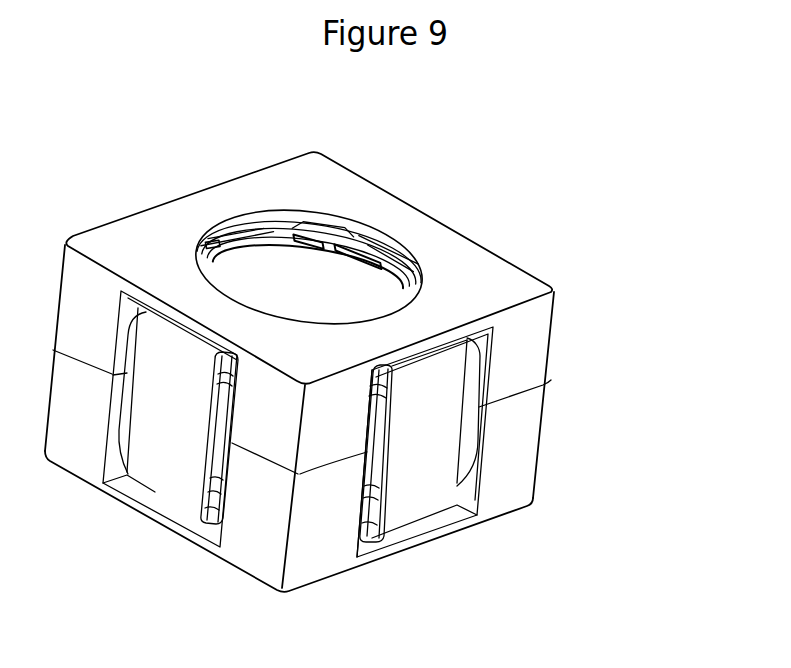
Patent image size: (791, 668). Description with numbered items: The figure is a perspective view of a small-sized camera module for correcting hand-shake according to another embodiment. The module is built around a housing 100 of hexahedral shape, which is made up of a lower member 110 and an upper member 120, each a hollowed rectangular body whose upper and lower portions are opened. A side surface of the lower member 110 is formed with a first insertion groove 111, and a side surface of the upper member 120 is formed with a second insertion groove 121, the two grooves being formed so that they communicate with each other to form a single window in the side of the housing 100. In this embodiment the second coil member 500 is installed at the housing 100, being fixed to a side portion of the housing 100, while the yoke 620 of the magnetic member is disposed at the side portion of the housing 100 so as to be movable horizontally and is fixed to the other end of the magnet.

The housing 100 is at (663, 228).
The upper member 120 is at (493, 275).
The lower member 110 is at (510, 438).
The second insertion groove 121 is at (480, 346).
The first insertion groove 111 is at (465, 493).
The second coil member 500 is at (465, 450).
The yoke 620 is at (403, 493).